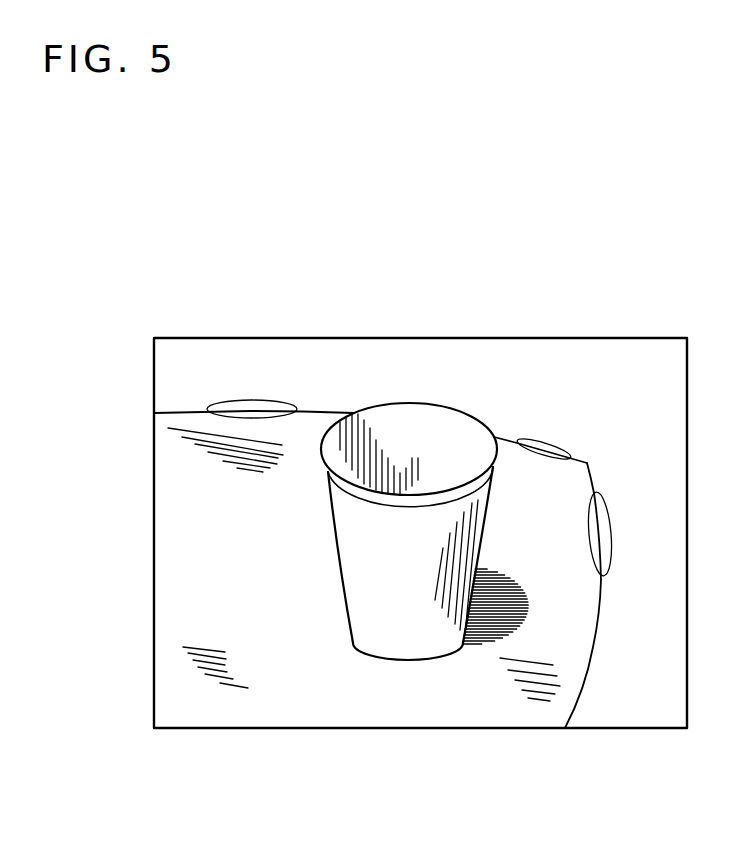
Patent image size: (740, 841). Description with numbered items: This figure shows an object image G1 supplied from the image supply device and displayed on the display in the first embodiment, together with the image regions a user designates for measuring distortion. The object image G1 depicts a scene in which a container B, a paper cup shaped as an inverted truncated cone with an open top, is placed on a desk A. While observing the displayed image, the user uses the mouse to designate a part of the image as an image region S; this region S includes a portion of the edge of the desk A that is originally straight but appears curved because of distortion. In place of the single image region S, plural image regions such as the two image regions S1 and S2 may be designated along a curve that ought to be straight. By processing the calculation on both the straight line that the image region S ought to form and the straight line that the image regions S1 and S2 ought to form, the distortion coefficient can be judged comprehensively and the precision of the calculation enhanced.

The object image G1 is at (588, 338).
The desk A is at (265, 715).
The container (paper cup) B is at (350, 413).
The image region S is at (605, 502).
The image region S1 is at (519, 443).
The image region S2 is at (292, 402).